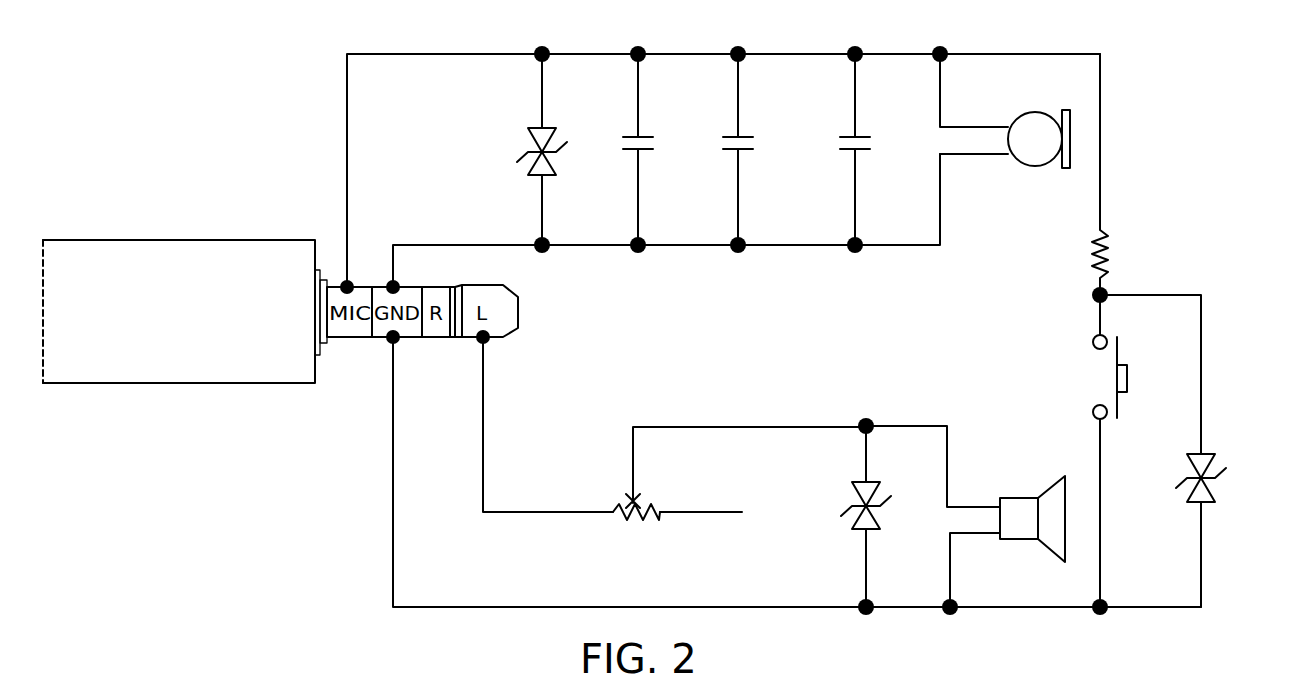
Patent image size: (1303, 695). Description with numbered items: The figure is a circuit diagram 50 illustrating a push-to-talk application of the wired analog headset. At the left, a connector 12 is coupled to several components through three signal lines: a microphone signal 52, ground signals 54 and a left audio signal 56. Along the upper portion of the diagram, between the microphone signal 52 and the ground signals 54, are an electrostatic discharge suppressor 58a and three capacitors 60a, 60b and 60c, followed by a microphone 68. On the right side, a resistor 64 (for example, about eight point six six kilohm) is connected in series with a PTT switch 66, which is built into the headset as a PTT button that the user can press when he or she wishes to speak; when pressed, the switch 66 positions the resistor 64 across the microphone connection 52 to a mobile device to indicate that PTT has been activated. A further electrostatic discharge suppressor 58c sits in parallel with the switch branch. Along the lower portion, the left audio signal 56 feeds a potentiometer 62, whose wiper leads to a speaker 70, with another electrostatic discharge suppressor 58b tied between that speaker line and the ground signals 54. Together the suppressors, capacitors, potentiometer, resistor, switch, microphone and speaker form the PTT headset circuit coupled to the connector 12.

The connector 12 is at (178, 240).
The circuit diagram 50 is at (197, 112).
The microphone signal 52 is at (347, 172).
The ground signals 54 is at (453, 245).
The left audio signal 56 is at (483, 424).
The electrostatic discharge suppressor 58a is at (516, 149).
The electrostatic discharge suppressor 58b is at (840, 516).
The electrostatic discharge suppressor 58c is at (1187, 451).
The capacitor 60a is at (659, 149).
The capacitor 60b is at (759, 149).
The capacitor 60c is at (875, 149).
The potentiometer 62 is at (739, 492).
The resistor 64 is at (1136, 178).
The PTT switch 66 is at (1132, 455).
The microphone 68 is at (1001, 107).
The speaker 70 is at (974, 517).